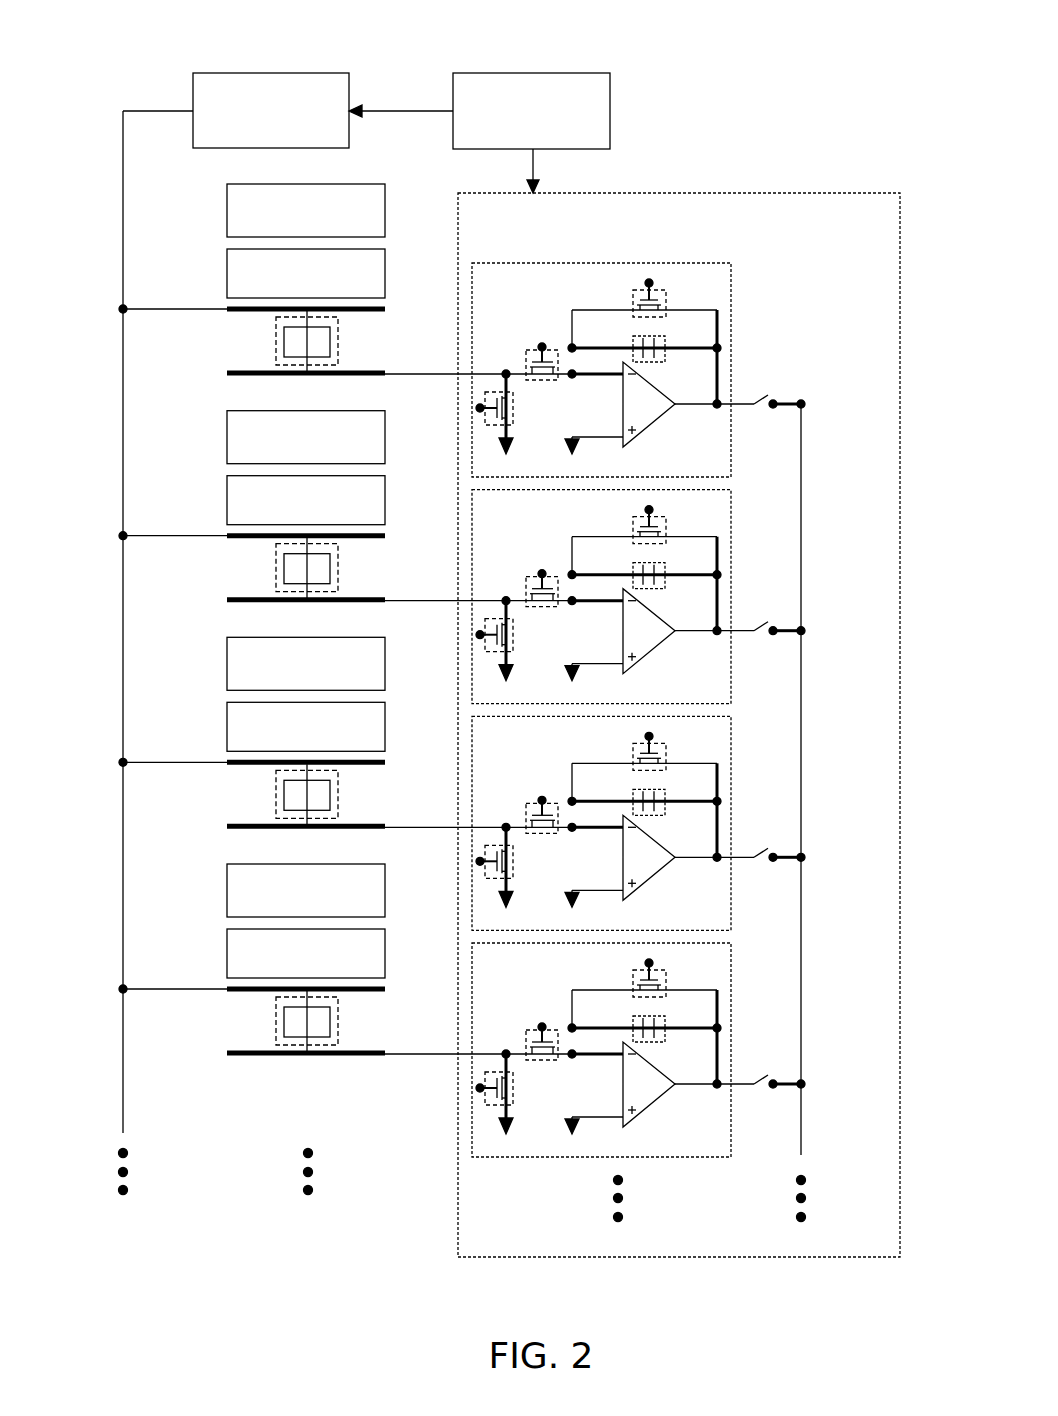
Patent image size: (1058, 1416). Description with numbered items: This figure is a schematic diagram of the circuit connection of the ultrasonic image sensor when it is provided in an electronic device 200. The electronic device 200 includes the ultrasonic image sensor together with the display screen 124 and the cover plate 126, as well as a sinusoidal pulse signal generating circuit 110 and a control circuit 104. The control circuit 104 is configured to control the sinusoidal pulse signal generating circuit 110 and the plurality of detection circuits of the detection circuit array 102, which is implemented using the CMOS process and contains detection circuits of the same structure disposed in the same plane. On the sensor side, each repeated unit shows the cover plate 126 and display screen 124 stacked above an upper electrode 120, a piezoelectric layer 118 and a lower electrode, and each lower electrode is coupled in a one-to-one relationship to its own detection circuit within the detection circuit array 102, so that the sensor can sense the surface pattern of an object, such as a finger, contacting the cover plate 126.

The electronic device 200 is at (137, 50).
The sinusoidal pulse signal generating circuit 110 is at (252, 118).
The control circuit 104 is at (512, 118).
The detection circuit array 102 is at (902, 196).
The cover plate 126 is at (287, 222).
The display screen 124 is at (287, 285).
The upper electrode 120 is at (227, 308).
The piezoelectric layer 118 is at (338, 347).